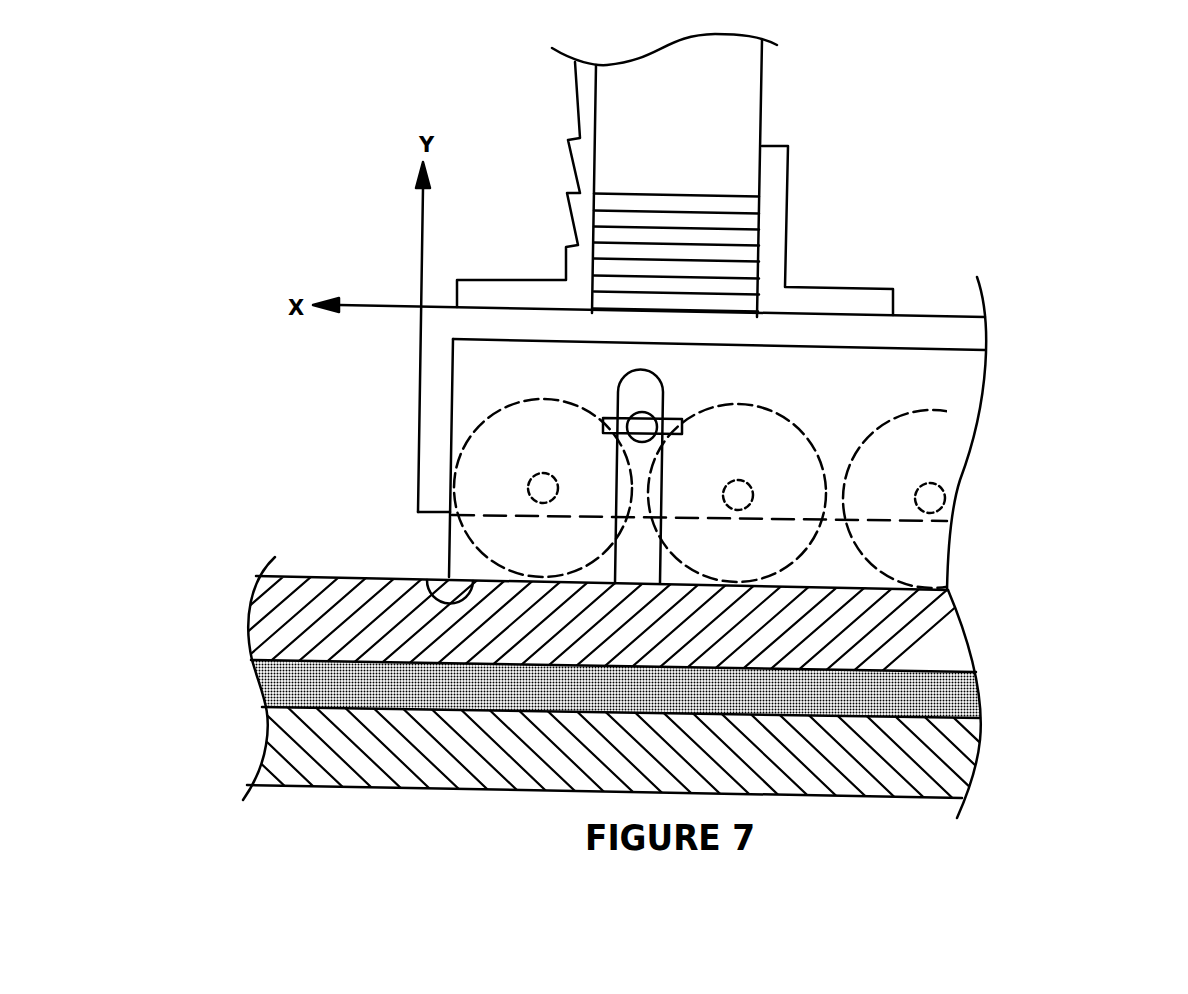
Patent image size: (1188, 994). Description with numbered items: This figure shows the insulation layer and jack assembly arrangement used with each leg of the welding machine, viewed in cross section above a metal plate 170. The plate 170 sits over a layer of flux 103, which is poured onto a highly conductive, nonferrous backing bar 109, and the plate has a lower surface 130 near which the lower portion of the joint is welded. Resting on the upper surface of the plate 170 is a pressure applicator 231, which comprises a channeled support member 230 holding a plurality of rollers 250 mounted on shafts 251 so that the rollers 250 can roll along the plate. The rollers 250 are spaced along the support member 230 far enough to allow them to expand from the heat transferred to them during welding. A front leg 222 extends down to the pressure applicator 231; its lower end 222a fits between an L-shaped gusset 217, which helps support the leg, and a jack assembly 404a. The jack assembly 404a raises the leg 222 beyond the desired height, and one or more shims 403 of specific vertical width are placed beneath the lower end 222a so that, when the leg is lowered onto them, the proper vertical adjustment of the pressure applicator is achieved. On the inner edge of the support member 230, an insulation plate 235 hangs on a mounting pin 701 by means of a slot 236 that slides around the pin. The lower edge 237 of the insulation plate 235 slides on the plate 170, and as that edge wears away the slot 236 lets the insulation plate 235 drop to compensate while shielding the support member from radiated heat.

The front leg 222 is at (660, 102).
The lower end of leg 222a is at (732, 195).
The jack assembly 404a is at (522, 146).
The L-shaped gusset 217 is at (786, 200).
The shim 403 is at (705, 272).
The channeled support member 230 is at (930, 317).
The insulation plate 235 is at (985, 317).
The roller 250 is at (807, 443).
The shaft 251 is at (544, 486).
The slot 236 is at (618, 398).
The mounting pin 701 is at (646, 424).
The metal plate 170 is at (247, 607).
The pressure applicator 231 is at (334, 555).
The flux 103 is at (837, 688).
The backing bar 109 is at (960, 738).
The lower surface 130 is at (290, 687).
The lower edge of insulation plate 237 is at (301, 350).